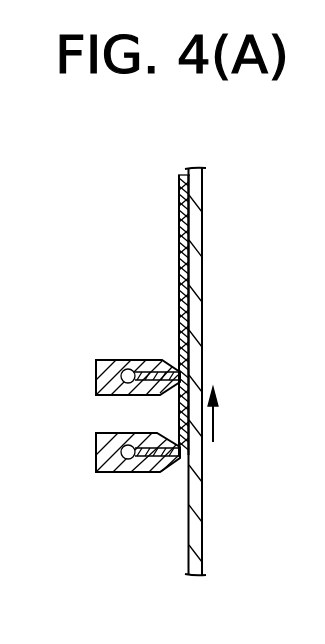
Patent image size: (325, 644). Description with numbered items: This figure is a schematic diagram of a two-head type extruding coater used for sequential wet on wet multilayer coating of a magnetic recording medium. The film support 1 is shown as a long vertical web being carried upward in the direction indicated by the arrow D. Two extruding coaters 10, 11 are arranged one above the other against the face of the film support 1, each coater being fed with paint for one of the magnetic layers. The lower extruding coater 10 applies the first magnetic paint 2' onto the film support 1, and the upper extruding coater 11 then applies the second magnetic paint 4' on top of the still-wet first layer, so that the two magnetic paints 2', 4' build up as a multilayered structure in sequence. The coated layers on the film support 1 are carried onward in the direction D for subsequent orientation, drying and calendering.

The film support 1 is at (200, 497).
The magnetic paint 2' is at (224, 315).
The magnetic paint 4' is at (144, 264).
The extruding coater 10 is at (96, 457).
The extruding coater 11 is at (96, 381).
The direction of film support travel D is at (216, 418).